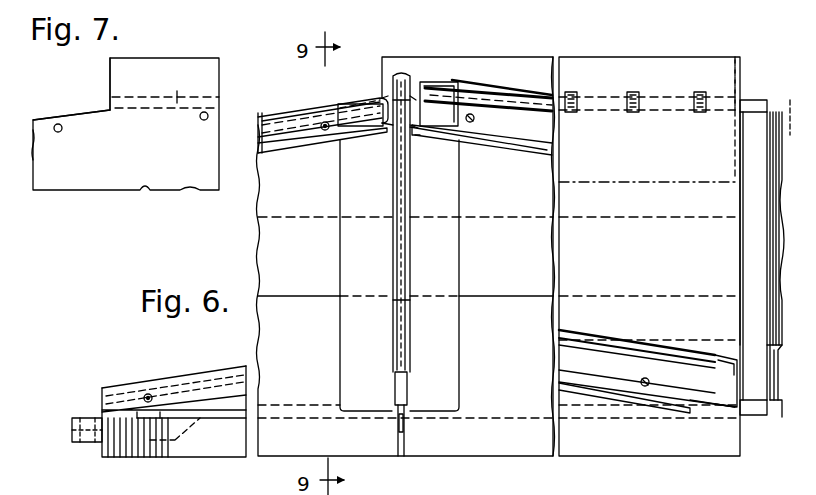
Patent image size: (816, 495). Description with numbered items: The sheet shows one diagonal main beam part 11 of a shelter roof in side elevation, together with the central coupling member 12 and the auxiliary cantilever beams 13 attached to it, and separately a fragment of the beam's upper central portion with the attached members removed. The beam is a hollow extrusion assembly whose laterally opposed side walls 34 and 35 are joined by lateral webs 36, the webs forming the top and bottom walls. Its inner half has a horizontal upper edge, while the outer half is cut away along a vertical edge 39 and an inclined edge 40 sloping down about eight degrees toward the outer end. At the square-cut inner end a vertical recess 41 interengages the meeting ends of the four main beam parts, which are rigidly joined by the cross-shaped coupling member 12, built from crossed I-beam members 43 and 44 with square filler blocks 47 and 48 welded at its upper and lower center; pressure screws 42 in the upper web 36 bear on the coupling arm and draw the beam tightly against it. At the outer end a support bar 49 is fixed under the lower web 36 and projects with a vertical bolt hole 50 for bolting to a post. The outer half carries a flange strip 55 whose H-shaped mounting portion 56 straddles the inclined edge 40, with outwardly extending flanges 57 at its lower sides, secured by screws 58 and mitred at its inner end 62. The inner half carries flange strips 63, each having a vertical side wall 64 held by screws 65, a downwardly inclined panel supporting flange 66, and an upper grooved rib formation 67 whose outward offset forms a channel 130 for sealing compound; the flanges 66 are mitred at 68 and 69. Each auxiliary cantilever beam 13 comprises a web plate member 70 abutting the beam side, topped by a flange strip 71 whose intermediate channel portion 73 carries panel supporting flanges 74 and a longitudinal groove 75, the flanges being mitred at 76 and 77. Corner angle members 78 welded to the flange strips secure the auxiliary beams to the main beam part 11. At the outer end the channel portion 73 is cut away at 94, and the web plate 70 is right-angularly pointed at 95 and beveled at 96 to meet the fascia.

In FIG. 7, the main beam part 11 is at (78, 204).
In FIG. 6, the main beam part 11 is at (246, 249).
In FIG. 6, the coupling member 12 is at (777, 97).
In FIG. 6, the auxiliary cantilever beam 13 is at (334, 243).
In FIG. 6, the side wall 34 is at (614, 447).
In FIG. 6, the side wall 35 is at (613, 67).
In FIG. 7, the lateral web 36 is at (178, 96).
In FIG. 6, the lateral web 36 is at (300, 410).
In FIG. 7, the vertical edge 39 is at (110, 85).
In FIG. 7, the inclined edge 40 is at (45, 120).
In FIG. 6, the inclined edge 40 is at (281, 116).
In FIG. 6, the vertical recess 41 is at (735, 70).
In FIG. 6, the pressure screws 42 is at (628, 88).
In FIG. 6, the I-beam member 43 is at (780, 418).
In FIG. 6, the I-beam member 44 is at (755, 327).
In FIG. 6, the filler block 47 is at (750, 105).
In FIG. 6, the filler block 48 is at (755, 416).
In FIG. 6, the support bar 49 is at (99, 447).
In FIG. 6, the bolt hole 50 is at (84, 412).
In FIG. 6, the flange strip 55 is at (303, 101).
In FIG. 6, the mounting portion 56 is at (262, 118).
In FIG. 6, the flange 57 is at (290, 146).
In FIG. 6, the screws 58 is at (326, 131).
In FIG. 6, the mitred inner end 62 is at (352, 136).
In FIG. 6, the flange strip 63 is at (508, 77).
In FIG. 6, the vertical side wall 64 is at (512, 138).
In FIG. 6, the screws 65 is at (475, 118).
In FIG. 6, the panel supporting flange 66 is at (531, 152).
In FIG. 6, the grooved rib formation 67 is at (522, 93).
In FIG. 6, the mitred outer end 68 is at (447, 134).
In FIG. 6, the mitred inner end 69 is at (712, 410).
In FIG. 6, the web plate member 70 is at (407, 258).
In FIG. 6, the flange strip 71 is at (337, 278).
In FIG. 6, the intermediate channel portion 73 is at (410, 309).
In FIG. 6, the panel supporting flanges 74 is at (340, 327).
In FIG. 6, the longitudinal groove 75 is at (400, 234).
In FIG. 6, the mitred inner end 76 is at (368, 130).
In FIG. 6, the mitred outer end 77 is at (357, 410).
In FIG. 6, the corner angle member 78 is at (348, 106).
In FIG. 6, the cut-away 94 is at (407, 400).
In FIG. 6, the right-angularly pointed edge 95 is at (406, 428).
In FIG. 6, the beveled edge 96 is at (398, 448).
In FIG. 6, the channel 130 is at (722, 362).